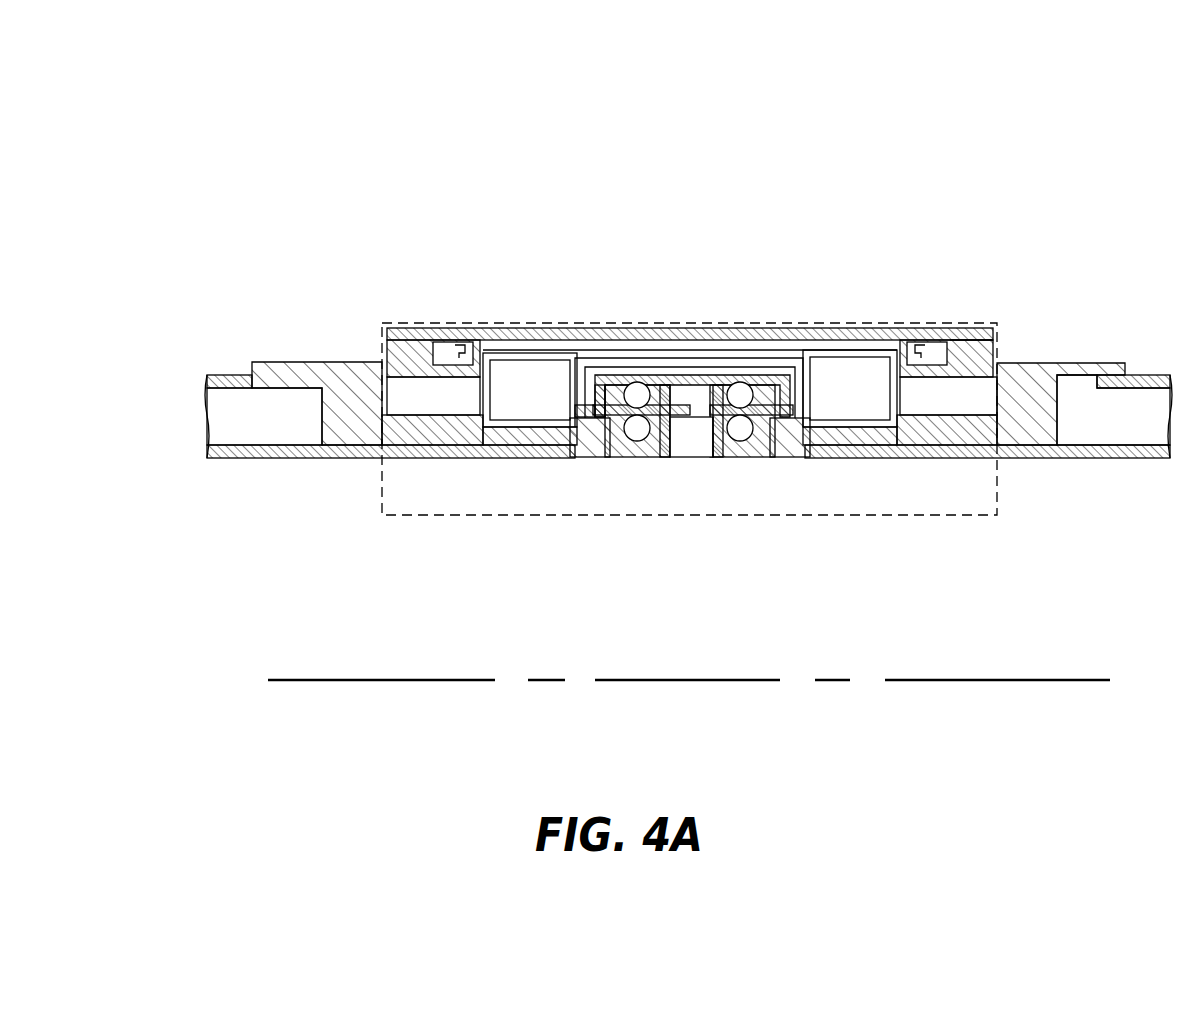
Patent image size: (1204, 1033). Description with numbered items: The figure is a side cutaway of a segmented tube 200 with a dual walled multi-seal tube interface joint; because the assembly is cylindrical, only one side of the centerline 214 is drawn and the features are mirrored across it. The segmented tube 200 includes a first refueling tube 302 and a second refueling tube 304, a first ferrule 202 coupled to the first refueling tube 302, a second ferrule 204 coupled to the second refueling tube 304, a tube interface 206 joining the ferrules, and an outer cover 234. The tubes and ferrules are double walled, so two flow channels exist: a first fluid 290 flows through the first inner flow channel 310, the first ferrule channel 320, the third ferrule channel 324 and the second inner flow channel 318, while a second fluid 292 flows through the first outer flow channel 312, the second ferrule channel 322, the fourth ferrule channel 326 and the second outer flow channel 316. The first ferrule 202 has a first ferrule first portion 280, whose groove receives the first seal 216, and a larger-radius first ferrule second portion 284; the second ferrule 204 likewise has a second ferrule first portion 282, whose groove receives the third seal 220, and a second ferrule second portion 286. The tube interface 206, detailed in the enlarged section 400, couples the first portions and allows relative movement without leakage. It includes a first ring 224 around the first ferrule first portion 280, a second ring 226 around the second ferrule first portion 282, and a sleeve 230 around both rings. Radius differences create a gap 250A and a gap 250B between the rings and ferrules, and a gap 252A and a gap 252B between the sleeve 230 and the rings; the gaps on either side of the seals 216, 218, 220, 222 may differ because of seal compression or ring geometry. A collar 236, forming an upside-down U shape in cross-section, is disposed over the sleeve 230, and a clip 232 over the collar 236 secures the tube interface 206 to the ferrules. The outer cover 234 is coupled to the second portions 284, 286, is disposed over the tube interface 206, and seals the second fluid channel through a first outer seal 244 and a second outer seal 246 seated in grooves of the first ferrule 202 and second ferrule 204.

The segmented tube 200 is at (212, 120).
The first ferrule 202 is at (316, 362).
The second ferrule 204 is at (1058, 363).
The tube interface 206 is at (965, 515).
The centerline 214 is at (721, 678).
The first seal 216 is at (636, 441).
The second seal 218 is at (635, 374).
The third seal 220 is at (740, 441).
The fourth seal 222 is at (752, 374).
The first ring 224 is at (573, 404).
The second ring 226 is at (808, 389).
The sleeve 230 is at (699, 372).
The clip 232 is at (521, 352).
The outer cover 234 is at (882, 323).
The collar 236 is at (653, 358).
The first outer seal 244 is at (443, 338).
The second outer seal 246 is at (935, 338).
The gap 250A is at (673, 417).
The gap 250B is at (777, 393).
The gap 252A is at (600, 400).
The gap 252B is at (713, 440).
The first ferrule first portion 280 is at (650, 458).
The second ferrule first portion 282 is at (723, 460).
The first ferrule second portion 284 is at (412, 336).
The second ferrule second portion 286 is at (963, 336).
The first fluid 290 is at (937, 643).
The second fluid 292 is at (1060, 430).
The first refueling tube 302 is at (222, 372).
The second refueling tube 304 is at (1150, 374).
The first inner flow channel 310 is at (232, 577).
The first outer flow channel 312 is at (232, 422).
The second outer flow channel 316 is at (1128, 408).
The second inner flow channel 318 is at (1093, 576).
The first ferrule channel 320 is at (608, 672).
The second ferrule channel 322 is at (400, 399).
The third ferrule channel 324 is at (720, 672).
The fourth ferrule channel 326 is at (932, 399).
The section 400 is at (707, 460).